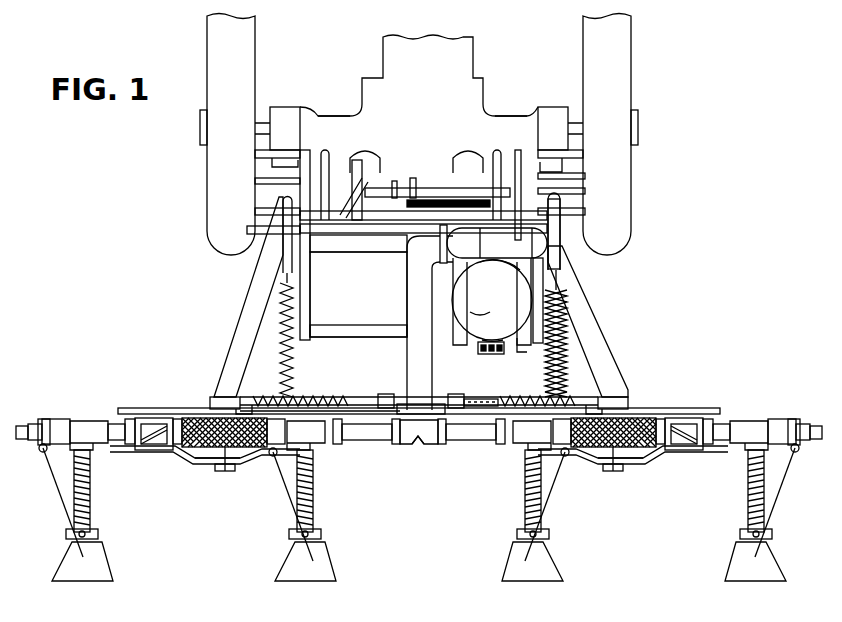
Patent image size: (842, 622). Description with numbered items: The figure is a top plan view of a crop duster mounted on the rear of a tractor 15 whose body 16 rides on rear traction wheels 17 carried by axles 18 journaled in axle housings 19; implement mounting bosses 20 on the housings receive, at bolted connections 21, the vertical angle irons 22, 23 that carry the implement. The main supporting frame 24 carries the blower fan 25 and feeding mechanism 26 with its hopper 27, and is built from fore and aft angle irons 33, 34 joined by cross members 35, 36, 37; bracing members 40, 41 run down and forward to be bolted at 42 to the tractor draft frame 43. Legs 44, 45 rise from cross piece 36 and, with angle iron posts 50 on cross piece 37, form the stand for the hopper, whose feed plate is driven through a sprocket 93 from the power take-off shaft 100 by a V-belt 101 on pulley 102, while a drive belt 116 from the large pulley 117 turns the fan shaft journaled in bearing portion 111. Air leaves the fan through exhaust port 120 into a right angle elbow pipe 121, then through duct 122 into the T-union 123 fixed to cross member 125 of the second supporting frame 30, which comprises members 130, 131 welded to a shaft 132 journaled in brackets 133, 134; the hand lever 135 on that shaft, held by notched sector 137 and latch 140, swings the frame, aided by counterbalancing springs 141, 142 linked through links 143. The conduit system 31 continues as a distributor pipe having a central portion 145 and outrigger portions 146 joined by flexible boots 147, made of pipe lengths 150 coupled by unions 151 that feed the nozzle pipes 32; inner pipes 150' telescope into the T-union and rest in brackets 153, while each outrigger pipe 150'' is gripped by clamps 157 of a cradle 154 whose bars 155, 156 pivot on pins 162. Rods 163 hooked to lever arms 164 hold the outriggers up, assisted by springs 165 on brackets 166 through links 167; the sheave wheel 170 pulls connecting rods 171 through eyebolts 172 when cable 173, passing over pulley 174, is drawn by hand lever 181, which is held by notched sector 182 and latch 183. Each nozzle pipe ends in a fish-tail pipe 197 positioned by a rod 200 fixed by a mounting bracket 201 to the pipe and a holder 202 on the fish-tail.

The tractor 15 is at (489, 50).
The body 16 is at (436, 99).
The rear traction wheels 17 is at (220, 67).
The axles 18 is at (262, 122).
The axle housings 19 is at (321, 116).
The implement mounting bosses 20 is at (289, 147).
The bolted connection 21 is at (270, 154).
The vertical angle iron 22 is at (290, 161).
The vertical angle iron 23 is at (545, 168).
The main supporting frame 24 is at (352, 386).
The blower fan 25 is at (570, 240).
The feeding mechanism 26 is at (470, 340).
The hopper 27 is at (472, 313).
The second supporting frame 30 is at (631, 343).
The conduit system 31 is at (459, 456).
The nozzle pipes 32 is at (101, 529).
The angle iron 33 is at (308, 296).
The angle iron 34 is at (560, 192).
The cross member 35 is at (365, 222).
The cross member 36 is at (350, 252).
The cross member 37 is at (362, 330).
The bracing member 40 is at (362, 176).
The bracing member 41 is at (500, 175).
The bolted connection 42 is at (352, 158).
The draft frame 43 is at (360, 162).
The leg 44 is at (482, 280).
The leg 45 is at (494, 264).
The angle iron posts 50 is at (488, 354).
The sprocket 93 is at (487, 341).
The power take-off shaft 100 is at (430, 188).
The V-belt 101 is at (497, 243).
The pulley 102 is at (410, 204).
The bearing portion 111 is at (491, 243).
The drive belt 116 is at (413, 178).
The pulley 117 is at (395, 181).
The exhaust port 120 is at (452, 258).
The right angle elbow pipe 121 is at (408, 252).
The duct 122 is at (406, 300).
The T-union 123 is at (424, 443).
The cross member 125 is at (405, 444).
The frame member 130 is at (250, 319).
The frame member 131 is at (588, 306).
The shaft 132 is at (398, 233).
The bracket 133 is at (295, 212).
The bracket 134 is at (548, 212).
The hand lever 135 is at (324, 152).
The notched sector 137 is at (290, 182).
The grip-release latch 140 is at (296, 230).
The counterbalancing spring 141 is at (281, 341).
The counterbalancing spring 142 is at (562, 380).
The links 143 is at (286, 245).
The central portion 145 is at (394, 444).
The outrigger portions 146 is at (41, 410).
The flexible boots 147 is at (248, 447).
The pipe lengths 150 is at (415, 408).
The inner pipes 150' is at (413, 454).
The inner pipe 150'' is at (412, 404).
The unions 151 is at (80, 421).
The brackets 153 is at (340, 444).
The cradle 154 is at (160, 465).
The bar 155 is at (155, 418).
The bar 156 is at (200, 464).
The clamps 157 is at (140, 444).
The pivot pins 162 is at (226, 471).
The rods 163 is at (165, 418).
The lever arm 164 is at (200, 408).
The counterbalancing tension springs 165 is at (320, 396).
The brackets 166 is at (387, 394).
The links 167 is at (238, 404).
The sheave wheel 170 is at (490, 399).
The connecting rods 171 is at (344, 397).
The eyebolts 172 is at (218, 397).
The cable 173 is at (532, 436).
The pulley 174 is at (518, 346).
The hand lever 181 is at (560, 176).
The notched sector 182 is at (518, 152).
The grip-release latch 183 is at (522, 243).
The fish-tail pipe 197 is at (82, 580).
The rod 200 is at (66, 505).
The mounting bracket 201 is at (48, 418).
The holder 202 is at (66, 536).